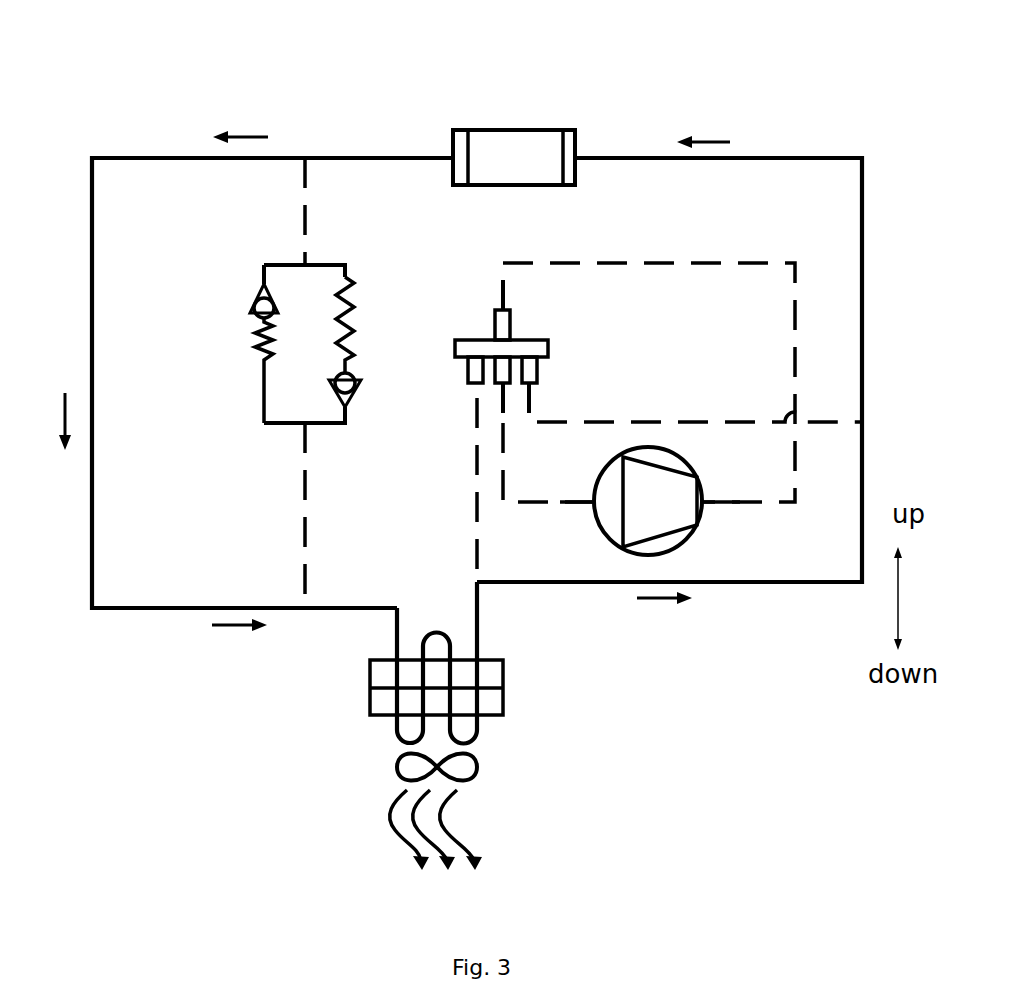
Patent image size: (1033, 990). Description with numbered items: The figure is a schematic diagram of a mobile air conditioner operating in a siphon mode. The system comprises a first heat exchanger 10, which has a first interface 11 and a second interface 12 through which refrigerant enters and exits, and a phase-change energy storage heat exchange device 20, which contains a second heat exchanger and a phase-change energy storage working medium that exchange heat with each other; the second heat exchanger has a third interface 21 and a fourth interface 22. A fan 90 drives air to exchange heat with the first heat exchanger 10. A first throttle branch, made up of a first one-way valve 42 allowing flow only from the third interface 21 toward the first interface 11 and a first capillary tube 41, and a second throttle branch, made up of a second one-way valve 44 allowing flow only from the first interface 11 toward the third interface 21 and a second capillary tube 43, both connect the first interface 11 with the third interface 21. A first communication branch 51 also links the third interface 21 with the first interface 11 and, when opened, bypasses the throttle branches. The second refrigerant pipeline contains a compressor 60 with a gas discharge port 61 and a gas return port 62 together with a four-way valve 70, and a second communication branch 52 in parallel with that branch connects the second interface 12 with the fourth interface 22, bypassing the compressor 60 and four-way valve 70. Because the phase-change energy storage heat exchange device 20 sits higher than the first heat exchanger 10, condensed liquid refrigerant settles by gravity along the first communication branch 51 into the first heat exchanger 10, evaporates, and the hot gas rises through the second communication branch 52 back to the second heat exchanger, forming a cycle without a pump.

The first heat exchanger 10 is at (449, 663).
The first interface 11 is at (395, 658).
The second interface 12 is at (478, 655).
The phase-change energy storage heat exchange device 20 is at (514, 145).
The third interface 21 is at (455, 158).
The fourth interface 22 is at (577, 160).
The first capillary tube 41 is at (257, 345).
The first one-way valve 42 is at (257, 302).
The second capillary tube 43 is at (352, 315).
The second one-way valve 44 is at (350, 395).
The first communication branch 51 is at (90, 285).
The second communication branch 52 is at (863, 307).
The compressor 60 is at (651, 506).
The gas discharge port 61 is at (703, 502).
The gas return port 62 is at (595, 502).
The four-way valve 70 is at (547, 340).
The fan 90 is at (397, 765).